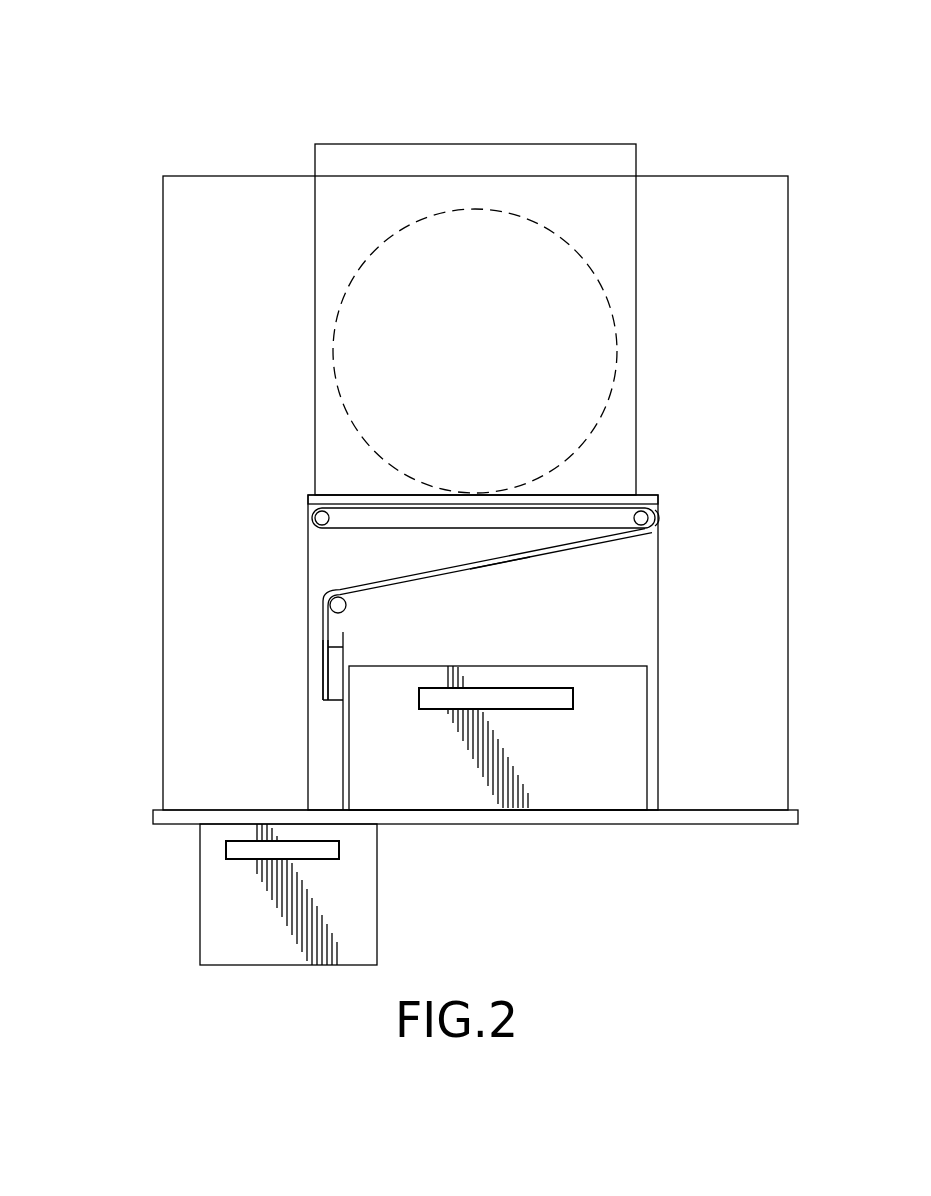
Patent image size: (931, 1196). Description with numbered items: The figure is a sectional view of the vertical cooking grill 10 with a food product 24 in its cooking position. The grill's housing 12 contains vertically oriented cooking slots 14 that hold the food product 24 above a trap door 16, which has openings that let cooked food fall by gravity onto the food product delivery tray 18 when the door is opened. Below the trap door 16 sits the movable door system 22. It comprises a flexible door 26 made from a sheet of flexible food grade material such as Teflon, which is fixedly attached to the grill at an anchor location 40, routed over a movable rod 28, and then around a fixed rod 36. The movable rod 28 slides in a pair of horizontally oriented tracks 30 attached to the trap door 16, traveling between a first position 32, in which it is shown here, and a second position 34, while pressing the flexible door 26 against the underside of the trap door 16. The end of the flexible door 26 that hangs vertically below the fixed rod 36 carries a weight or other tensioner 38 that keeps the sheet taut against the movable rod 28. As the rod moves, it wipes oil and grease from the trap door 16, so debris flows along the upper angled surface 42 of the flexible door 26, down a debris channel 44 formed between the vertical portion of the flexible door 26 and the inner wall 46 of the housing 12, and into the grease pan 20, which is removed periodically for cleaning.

The vertical cooking grill 10 is at (133, 106).
The housing 12 is at (163, 212).
The cooking slots 14 is at (353, 194).
The trap door 16 is at (612, 494).
The food product delivery tray 18 is at (620, 746).
The grease pan 20 is at (200, 905).
The movable door system 22 is at (275, 471).
The food product 24 is at (527, 208).
The flexible door 26 is at (600, 548).
The movable rod 28 is at (650, 517).
The tracks 30 is at (573, 516).
The first position 32 is at (653, 520).
The second position 34 is at (323, 514).
The fixed rod 36 is at (346, 605).
The tensioner 38 is at (332, 690).
The anchor location 40 is at (308, 507).
The upper angled surface 42 is at (482, 562).
The debris channel 44 is at (322, 642).
The inner wall 46 is at (343, 688).